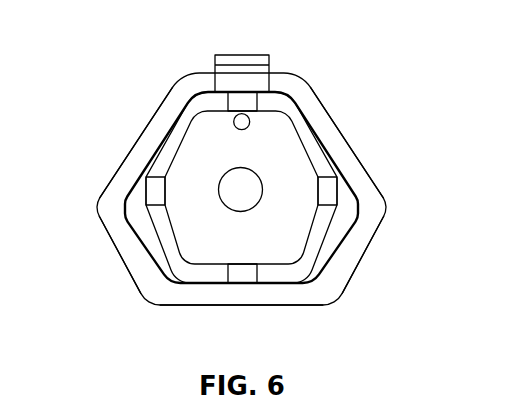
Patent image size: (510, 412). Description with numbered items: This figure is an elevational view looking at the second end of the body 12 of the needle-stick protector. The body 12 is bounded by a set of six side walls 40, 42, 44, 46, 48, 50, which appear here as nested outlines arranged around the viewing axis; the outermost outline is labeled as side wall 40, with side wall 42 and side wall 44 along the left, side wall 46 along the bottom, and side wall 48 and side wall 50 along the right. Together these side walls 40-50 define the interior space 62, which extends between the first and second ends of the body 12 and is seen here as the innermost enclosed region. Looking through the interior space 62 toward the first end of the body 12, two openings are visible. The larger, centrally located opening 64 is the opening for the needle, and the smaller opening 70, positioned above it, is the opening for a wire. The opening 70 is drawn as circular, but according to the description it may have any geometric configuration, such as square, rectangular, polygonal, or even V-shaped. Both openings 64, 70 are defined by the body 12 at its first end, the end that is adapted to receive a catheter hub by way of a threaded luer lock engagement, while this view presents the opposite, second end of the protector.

The body 12 is at (278, 72).
The side wall 40 is at (180, 72).
The side wall 42 is at (130, 143).
The side wall 44 is at (118, 262).
The side wall 46 is at (246, 306).
The side wall 48 is at (350, 283).
The side wall 50 is at (371, 172).
The interior space 62 is at (290, 213).
The opening for the needle 64 is at (247, 189).
The opening for a wire 70 is at (238, 122).